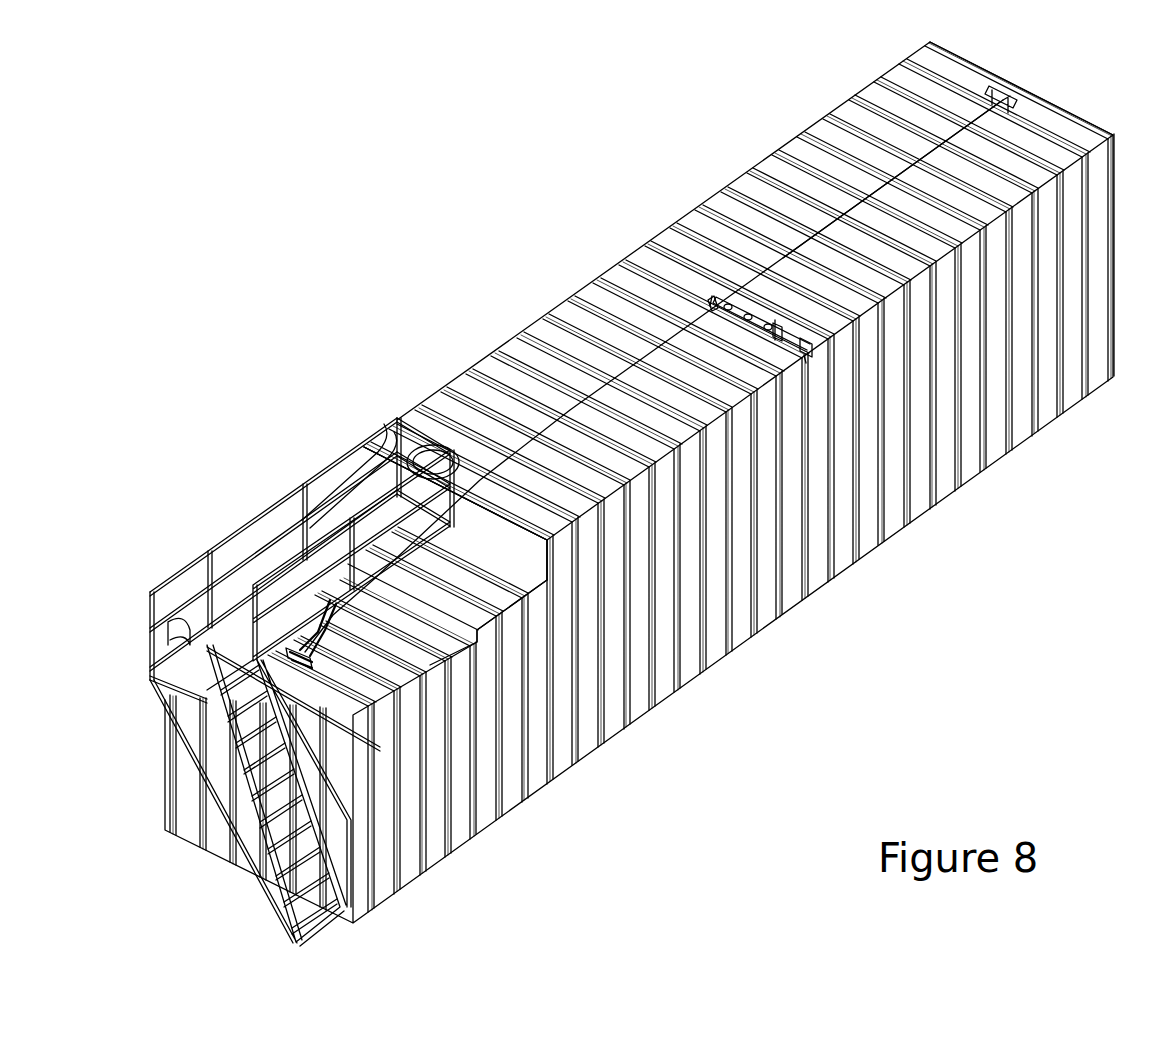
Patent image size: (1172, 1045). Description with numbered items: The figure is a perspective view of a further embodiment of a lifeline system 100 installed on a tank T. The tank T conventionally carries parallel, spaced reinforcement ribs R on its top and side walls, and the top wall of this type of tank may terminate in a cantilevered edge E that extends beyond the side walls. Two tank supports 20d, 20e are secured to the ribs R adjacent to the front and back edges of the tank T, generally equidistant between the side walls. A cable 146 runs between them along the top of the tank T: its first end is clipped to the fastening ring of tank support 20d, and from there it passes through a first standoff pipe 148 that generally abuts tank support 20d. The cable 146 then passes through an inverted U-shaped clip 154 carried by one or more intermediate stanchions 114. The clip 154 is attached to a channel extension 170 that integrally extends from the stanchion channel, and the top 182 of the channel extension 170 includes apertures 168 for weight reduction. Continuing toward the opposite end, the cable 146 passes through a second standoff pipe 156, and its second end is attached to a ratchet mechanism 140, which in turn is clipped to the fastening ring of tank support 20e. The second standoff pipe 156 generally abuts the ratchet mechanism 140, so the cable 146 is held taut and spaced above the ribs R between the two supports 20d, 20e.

The lifeline system 100 is at (303, 250).
The tank T is at (527, 345).
The reinforcement ribs R is at (605, 273).
The inverted U-shaped clip 154 is at (713, 303).
The channel extension 170 is at (737, 305).
The top of channel extension 182 is at (762, 325).
The tank support 20d is at (1003, 100).
The first standoff pipe 148 is at (953, 130).
The cable 146 is at (808, 235).
The intermediate stanchion 114 is at (783, 347).
The apertures 168 is at (747, 320).
The cantilevered edge E is at (655, 445).
The second standoff pipe 156 is at (447, 642).
The ratchet mechanism 140 is at (430, 630).
The tank support 20e is at (303, 663).